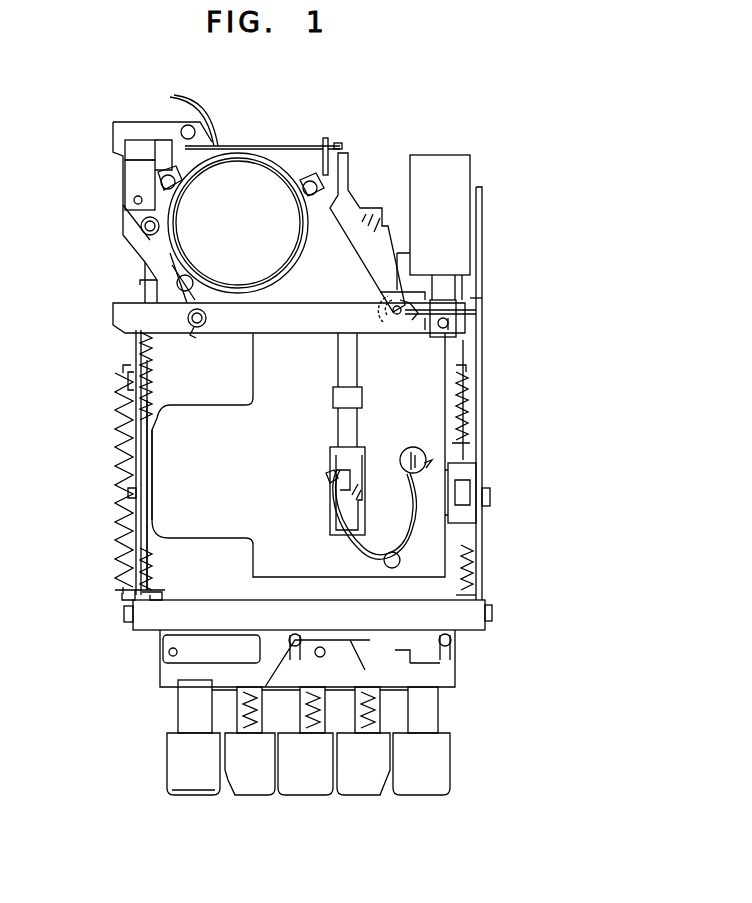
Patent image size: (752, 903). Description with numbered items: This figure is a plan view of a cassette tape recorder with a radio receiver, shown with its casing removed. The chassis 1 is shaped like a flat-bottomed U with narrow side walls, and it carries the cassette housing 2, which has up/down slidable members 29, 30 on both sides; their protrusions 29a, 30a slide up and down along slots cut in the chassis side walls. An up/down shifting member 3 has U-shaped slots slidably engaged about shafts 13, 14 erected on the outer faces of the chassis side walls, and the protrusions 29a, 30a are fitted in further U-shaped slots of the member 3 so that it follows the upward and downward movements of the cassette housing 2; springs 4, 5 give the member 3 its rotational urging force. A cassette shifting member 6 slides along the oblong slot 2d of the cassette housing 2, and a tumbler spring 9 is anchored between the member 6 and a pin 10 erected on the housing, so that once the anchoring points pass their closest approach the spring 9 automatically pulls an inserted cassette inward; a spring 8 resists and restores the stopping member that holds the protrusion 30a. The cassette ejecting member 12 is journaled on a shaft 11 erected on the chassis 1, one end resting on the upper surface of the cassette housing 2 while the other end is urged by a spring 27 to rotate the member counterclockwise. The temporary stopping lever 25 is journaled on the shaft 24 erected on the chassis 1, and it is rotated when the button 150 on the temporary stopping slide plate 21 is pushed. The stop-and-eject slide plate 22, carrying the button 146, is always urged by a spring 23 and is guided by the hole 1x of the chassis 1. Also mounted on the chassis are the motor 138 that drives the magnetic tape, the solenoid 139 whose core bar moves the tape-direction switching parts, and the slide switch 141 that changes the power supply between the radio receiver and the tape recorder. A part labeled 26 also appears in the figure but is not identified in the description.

The slide switch 141 is at (138, 138).
The motor 138 is at (250, 165).
The rod 26 is at (336, 145).
The solenoid 139 is at (445, 165).
The temporary stopping lever 25 is at (368, 222).
The cassette ejecting member 12 is at (300, 312).
The shaft 24 is at (390, 300).
The shaft 11 is at (195, 330).
The spring 27 is at (152, 385).
The cassette housing 2 is at (225, 540).
The up/down slidable member 29 is at (148, 476).
The protrusion 29a is at (128, 493).
The spring 23 is at (120, 558).
The spring 4 is at (152, 568).
The oblong slot 2d is at (333, 397).
The cassette shifting member 6 is at (336, 463).
The pin 10 is at (413, 447).
The tumbler spring 9 is at (365, 560).
The spring 8 is at (468, 394).
The up/down slidable member 30 is at (456, 500).
The protrusion 30a is at (490, 498).
The spring 5 is at (461, 568).
The up/down shifting member 3 is at (472, 632).
The shaft 14 is at (492, 614).
The shaft 13 is at (124, 615).
The chassis 1 is at (162, 678).
The hole 1x is at (178, 700).
The temporary stopping slide plate 21 is at (438, 713).
The stop-and-eject slide plate 22 is at (178, 742).
The button 146 is at (194, 800).
The button 150 is at (428, 800).